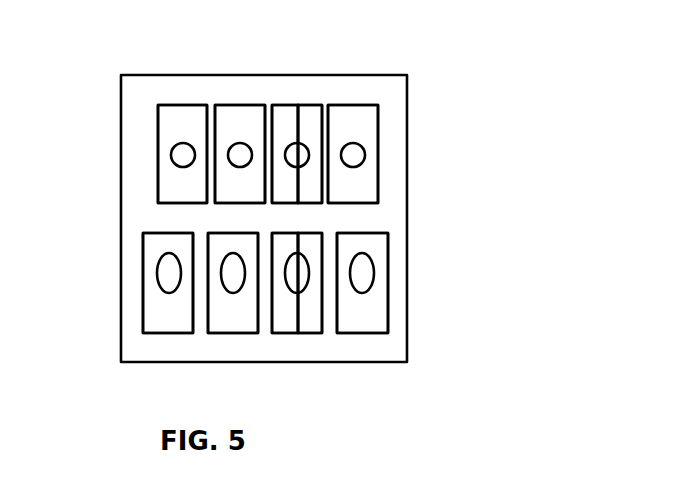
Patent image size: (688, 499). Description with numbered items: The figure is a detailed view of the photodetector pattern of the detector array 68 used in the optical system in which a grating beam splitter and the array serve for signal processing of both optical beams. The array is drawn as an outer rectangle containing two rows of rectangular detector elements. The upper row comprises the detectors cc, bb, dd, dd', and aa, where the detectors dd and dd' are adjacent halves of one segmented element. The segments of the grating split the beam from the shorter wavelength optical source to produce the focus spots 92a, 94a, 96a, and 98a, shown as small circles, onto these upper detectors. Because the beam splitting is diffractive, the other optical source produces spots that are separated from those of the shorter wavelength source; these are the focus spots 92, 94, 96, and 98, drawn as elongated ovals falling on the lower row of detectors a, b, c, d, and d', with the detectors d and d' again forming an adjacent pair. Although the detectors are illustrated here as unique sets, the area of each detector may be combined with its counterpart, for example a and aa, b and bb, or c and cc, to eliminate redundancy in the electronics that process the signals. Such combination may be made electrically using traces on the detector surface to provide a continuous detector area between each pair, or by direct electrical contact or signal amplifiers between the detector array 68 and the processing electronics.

The detector array 68 is at (407, 75).
The focus spot 92a is at (178, 166).
The focus spot 98a is at (241, 167).
The focus spot 96a is at (299, 167).
The focus spot 94a is at (361, 164).
The focus spot 92 is at (157, 276).
The focus spot 98 is at (224, 290).
The focus spot 96 is at (302, 292).
The focus spot 94 is at (374, 273).
The detector cc is at (177, 105).
The detector bb is at (234, 105).
The detector dd is at (273, 107).
The detector dd' is at (320, 107).
The detector aa is at (346, 105).
The detector c is at (169, 333).
The detector b is at (222, 333).
The detector d is at (297, 331).
The detector d' is at (327, 318).
The detector a is at (367, 333).